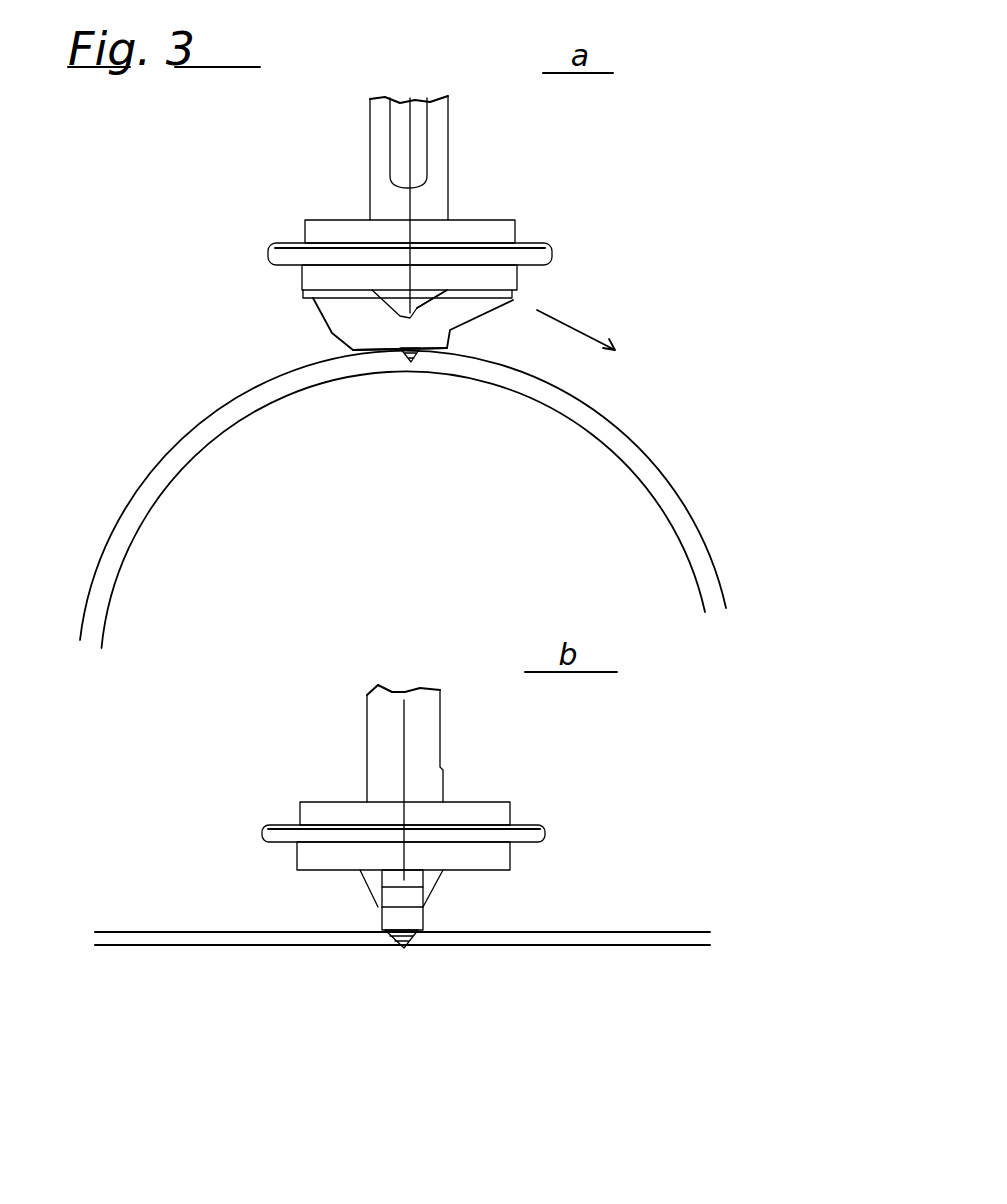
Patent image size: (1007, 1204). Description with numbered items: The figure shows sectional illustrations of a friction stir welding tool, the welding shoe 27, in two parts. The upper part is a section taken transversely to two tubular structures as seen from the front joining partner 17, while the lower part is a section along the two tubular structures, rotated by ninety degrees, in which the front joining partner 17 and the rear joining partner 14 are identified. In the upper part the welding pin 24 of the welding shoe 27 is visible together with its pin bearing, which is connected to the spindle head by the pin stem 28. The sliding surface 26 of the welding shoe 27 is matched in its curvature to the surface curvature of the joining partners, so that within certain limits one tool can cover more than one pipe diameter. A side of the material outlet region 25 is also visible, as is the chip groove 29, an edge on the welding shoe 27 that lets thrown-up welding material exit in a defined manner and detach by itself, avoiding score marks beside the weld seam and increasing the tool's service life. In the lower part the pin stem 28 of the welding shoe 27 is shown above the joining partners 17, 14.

The rear joining partner 14 is at (587, 938).
The front joining partner 17 is at (228, 418).
The welding pin 24 is at (412, 362).
The material outlet region 25 is at (417, 306).
The sliding surface 26 is at (373, 350).
The welding shoe 27 is at (488, 273).
The pin stem 28 is at (440, 183).
The chip groove 29 is at (450, 338).